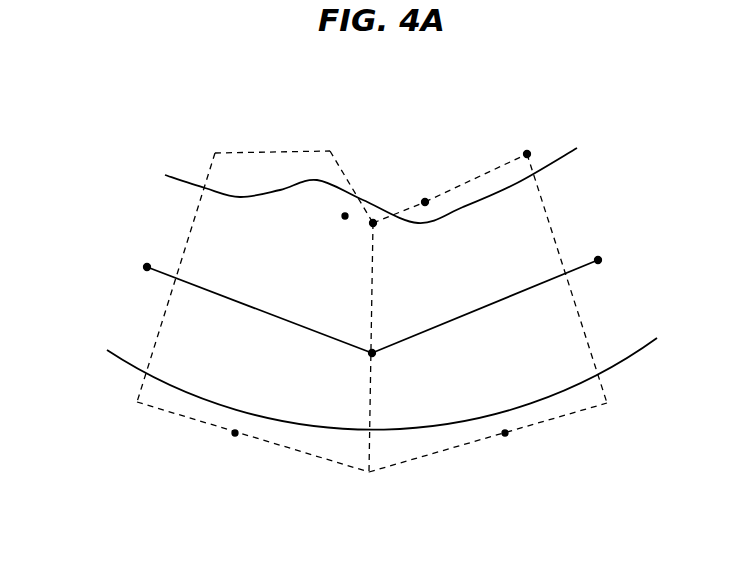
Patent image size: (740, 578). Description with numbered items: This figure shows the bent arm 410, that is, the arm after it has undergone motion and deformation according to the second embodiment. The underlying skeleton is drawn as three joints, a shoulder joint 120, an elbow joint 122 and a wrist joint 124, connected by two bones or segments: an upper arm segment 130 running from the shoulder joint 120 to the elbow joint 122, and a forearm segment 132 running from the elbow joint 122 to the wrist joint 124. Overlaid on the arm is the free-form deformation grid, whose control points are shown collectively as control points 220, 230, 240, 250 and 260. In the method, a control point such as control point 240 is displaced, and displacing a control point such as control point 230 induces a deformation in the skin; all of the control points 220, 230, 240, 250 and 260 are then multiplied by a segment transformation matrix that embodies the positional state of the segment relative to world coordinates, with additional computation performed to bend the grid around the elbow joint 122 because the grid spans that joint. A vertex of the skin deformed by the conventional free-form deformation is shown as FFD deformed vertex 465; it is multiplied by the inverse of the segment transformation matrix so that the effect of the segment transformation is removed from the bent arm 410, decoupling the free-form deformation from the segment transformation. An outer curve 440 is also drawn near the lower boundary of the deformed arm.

The shoulder joint 120 is at (147, 267).
The elbow joint 122 is at (370, 355).
The wrist joint 124 is at (598, 263).
The upper arm segment 130 is at (260, 310).
The forearm segment 132 is at (493, 300).
The control point 220 is at (215, 150).
The control point 230 is at (330, 148).
The control point 240 is at (375, 225).
The control point 250 is at (425, 199).
The control point 260 is at (527, 151).
The bent arm 410 is at (380, 115).
The arc 440 is at (408, 428).
The FFD deformed vertex 465 is at (345, 219).